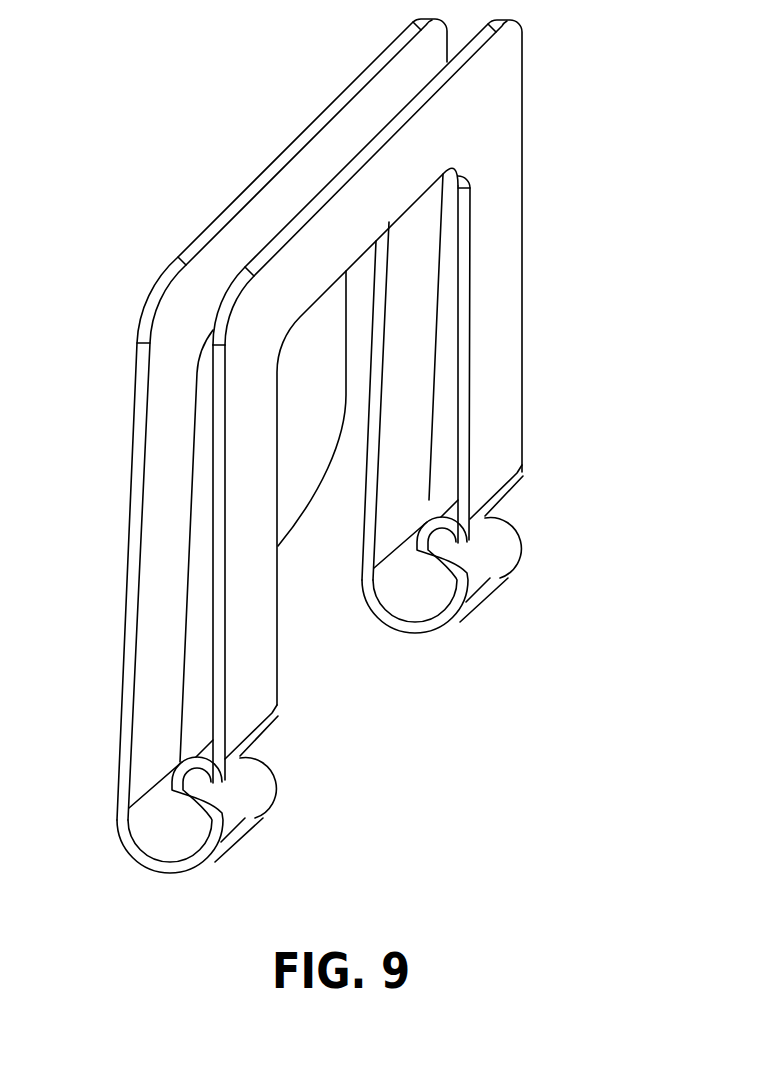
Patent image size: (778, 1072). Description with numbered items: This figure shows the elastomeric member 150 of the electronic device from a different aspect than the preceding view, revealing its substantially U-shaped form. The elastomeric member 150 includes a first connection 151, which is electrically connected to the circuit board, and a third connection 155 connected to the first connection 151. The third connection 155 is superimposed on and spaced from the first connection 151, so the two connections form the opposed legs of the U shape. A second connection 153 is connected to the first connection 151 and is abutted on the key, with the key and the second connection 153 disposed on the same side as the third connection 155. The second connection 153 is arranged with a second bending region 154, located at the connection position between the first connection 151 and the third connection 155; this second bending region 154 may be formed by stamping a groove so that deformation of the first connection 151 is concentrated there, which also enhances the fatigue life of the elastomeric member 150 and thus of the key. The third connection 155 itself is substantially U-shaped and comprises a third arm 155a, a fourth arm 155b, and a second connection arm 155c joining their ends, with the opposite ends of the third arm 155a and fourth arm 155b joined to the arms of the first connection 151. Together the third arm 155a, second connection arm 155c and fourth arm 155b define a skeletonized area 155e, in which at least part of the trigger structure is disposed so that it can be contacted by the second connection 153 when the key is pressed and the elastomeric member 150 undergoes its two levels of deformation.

The elastomeric member 150 is at (347, 446).
The first connection 151 is at (162, 396).
The second connection 153 is at (316, 447).
The second bending region 154 is at (473, 530).
The third connection 155 is at (428, 401).
The third arm 155a is at (498, 338).
The fourth arm 155b is at (257, 660).
The second connection arm 155c is at (337, 212).
The skeletonized area 155e is at (320, 693).